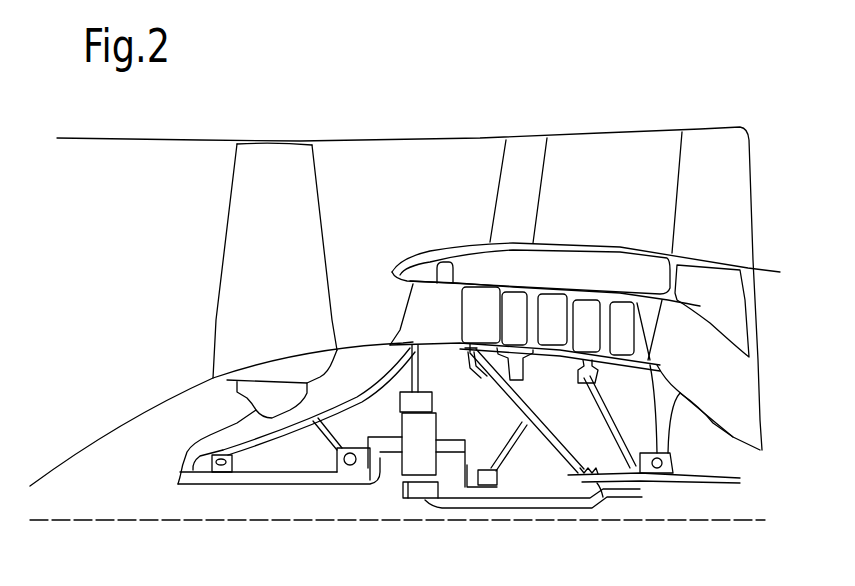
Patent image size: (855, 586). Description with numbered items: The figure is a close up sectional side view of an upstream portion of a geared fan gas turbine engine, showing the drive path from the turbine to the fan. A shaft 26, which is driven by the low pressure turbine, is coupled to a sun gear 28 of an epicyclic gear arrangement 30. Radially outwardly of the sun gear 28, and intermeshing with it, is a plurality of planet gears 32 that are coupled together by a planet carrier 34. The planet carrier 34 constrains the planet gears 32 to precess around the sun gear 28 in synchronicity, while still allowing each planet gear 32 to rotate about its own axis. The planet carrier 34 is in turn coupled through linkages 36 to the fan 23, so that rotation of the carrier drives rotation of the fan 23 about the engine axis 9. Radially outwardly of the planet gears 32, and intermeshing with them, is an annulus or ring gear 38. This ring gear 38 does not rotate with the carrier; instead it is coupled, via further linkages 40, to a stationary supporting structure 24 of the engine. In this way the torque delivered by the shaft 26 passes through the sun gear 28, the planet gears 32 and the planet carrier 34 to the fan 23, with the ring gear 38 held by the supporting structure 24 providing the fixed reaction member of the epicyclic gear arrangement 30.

The engine axis 9 is at (185, 521).
The fan 23 is at (246, 292).
The stationary supporting structure 24 is at (427, 312).
The shaft 26 is at (643, 482).
The sun gear 28 is at (415, 498).
The epicyclic gear arrangement 30 is at (400, 463).
The planet gears 32 is at (402, 485).
The planet carrier 34 is at (455, 470).
The linkages 36 is at (372, 478).
The ring gear 38 is at (405, 400).
The linkages 40 is at (420, 370).